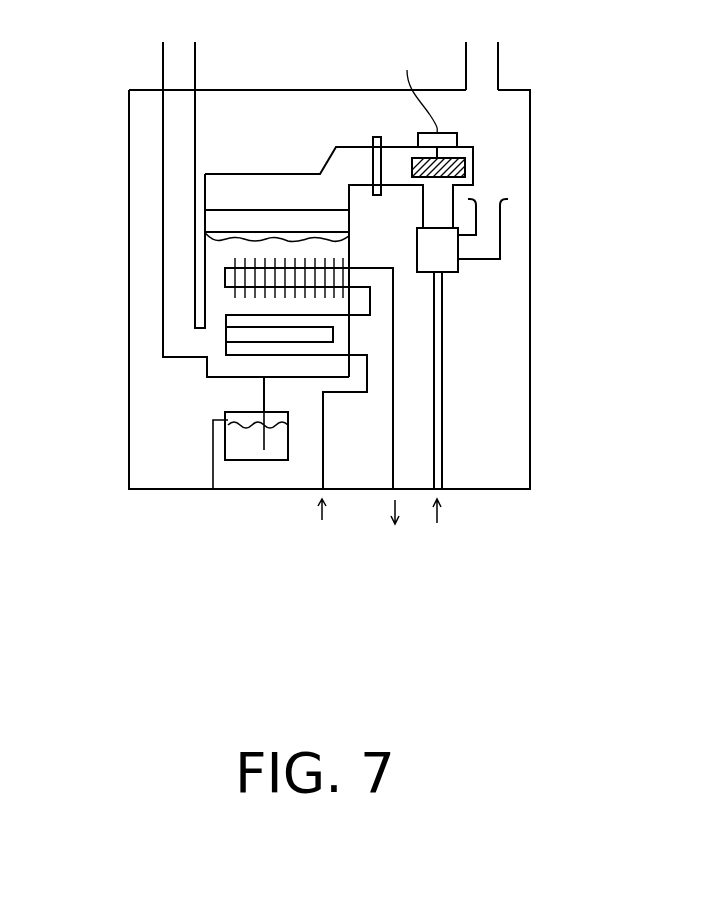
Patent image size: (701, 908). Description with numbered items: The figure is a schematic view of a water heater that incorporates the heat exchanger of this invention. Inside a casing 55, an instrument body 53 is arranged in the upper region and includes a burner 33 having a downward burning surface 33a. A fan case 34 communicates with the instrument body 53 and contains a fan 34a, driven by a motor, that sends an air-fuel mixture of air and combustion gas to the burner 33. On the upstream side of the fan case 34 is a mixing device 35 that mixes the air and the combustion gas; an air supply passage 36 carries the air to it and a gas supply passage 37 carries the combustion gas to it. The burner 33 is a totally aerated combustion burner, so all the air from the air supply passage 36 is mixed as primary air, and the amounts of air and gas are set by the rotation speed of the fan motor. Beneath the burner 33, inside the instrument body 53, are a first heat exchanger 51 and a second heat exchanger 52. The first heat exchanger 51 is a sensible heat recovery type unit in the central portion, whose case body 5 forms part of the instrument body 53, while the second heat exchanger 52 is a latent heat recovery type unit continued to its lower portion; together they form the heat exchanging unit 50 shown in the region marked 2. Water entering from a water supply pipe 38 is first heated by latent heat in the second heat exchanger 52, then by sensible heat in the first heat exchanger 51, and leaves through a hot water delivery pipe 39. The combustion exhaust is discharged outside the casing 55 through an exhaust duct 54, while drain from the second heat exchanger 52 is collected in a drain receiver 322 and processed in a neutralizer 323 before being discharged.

The combustion chamber 2 is at (340, 268).
The case body 5 is at (237, 297).
The burner 33 is at (265, 215).
The burning surface 33a is at (212, 236).
The fan case 34 is at (467, 150).
The fan 34a is at (465, 167).
The mixing device 35 is at (455, 272).
The air supply passage 36 is at (488, 213).
The gas supply passage 37 is at (442, 428).
The water supply pipe 38 is at (320, 477).
The hot water delivery pipe 39 is at (393, 475).
The heat exchanger unit 50 is at (225, 330).
The first heat exchanger 51 is at (225, 278).
The second heat exchanger 52 is at (230, 337).
The instrument body 53 is at (225, 174).
The exhaust duct 54 is at (170, 187).
The casing 55 is at (128, 132).
The drain receiver 322 is at (230, 377).
The neutralizer 323 is at (257, 460).